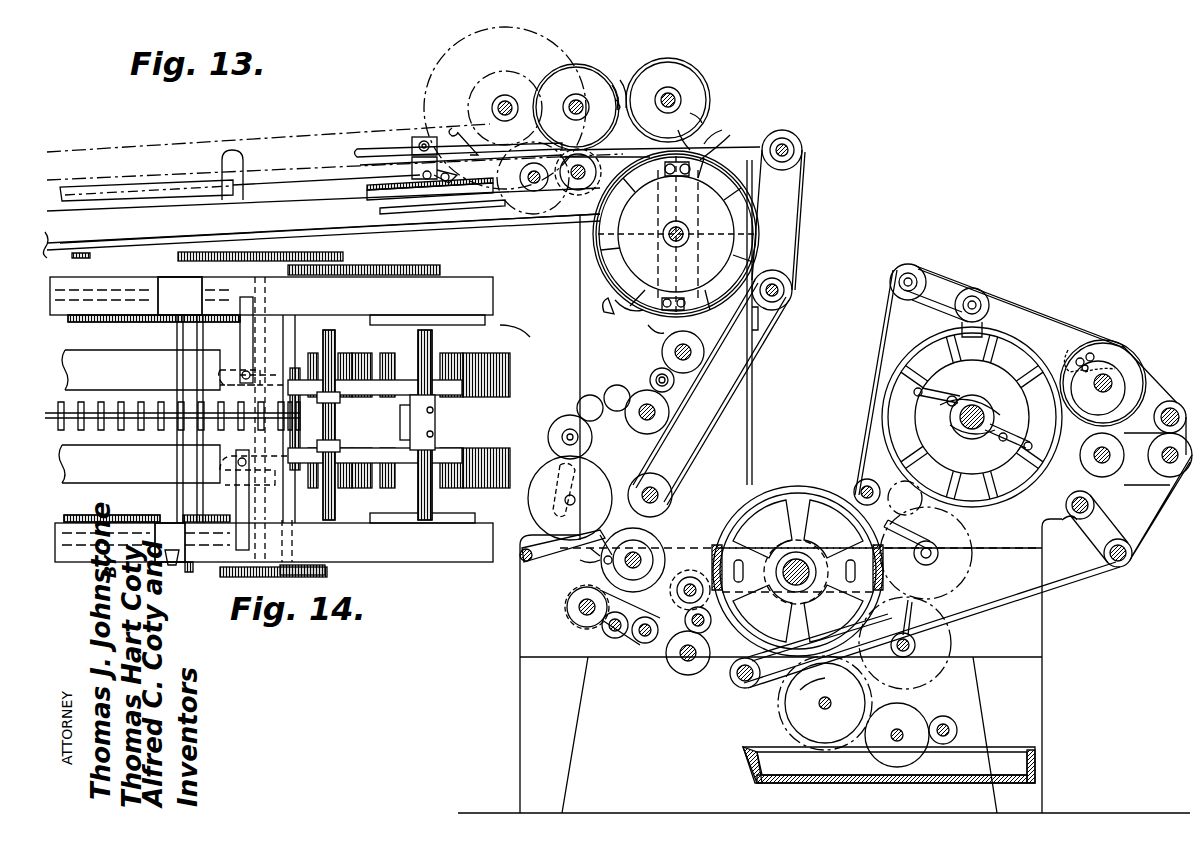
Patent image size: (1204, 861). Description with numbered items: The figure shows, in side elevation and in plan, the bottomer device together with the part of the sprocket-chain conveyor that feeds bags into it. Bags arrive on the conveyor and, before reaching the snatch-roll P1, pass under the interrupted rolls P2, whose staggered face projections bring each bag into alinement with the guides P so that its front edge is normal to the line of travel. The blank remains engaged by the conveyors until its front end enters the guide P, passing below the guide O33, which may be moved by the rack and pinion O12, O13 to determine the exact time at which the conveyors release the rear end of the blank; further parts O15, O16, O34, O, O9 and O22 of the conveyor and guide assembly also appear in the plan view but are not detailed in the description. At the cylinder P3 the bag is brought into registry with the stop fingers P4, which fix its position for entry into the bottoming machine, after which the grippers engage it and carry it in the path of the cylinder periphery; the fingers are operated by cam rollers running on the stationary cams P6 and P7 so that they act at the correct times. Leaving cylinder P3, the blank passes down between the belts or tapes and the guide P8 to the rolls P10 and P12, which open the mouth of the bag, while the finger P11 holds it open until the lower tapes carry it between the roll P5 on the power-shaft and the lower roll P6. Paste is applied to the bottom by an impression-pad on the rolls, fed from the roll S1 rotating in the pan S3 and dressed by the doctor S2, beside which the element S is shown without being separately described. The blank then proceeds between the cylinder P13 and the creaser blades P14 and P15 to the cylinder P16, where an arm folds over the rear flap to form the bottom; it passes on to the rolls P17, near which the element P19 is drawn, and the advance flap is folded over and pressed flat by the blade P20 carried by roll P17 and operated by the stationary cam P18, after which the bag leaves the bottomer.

In FIG. 13, the feed table rail O15 is at (278, 163).
In FIG. 13, the guide O33 is at (372, 150).
In FIG. 13, the lower rail O16 is at (328, 168).
In FIG. 13, the rack O12 is at (380, 189).
In FIG. 14, the rack O12 is at (125, 325).
In FIG. 13, the pinion O13 is at (444, 193).
In FIG. 14, the pinion O13 is at (195, 318).
In FIG. 13, the bar O34 is at (413, 196).
In FIG. 13, the pawl O is at (462, 135).
In FIG. 14, the comb bar O9 is at (135, 400).
In FIG. 14, the stop O22 is at (188, 564).
In FIG. 13, the guide P is at (508, 332).
In FIG. 14, the guide P is at (273, 370).
In FIG. 13, the snatch-roll P1 is at (680, 80).
In FIG. 14, the snatch-roll P1 is at (454, 444).
In FIG. 13, the interrupted roll P2 is at (582, 95).
In FIG. 14, the interrupted roll P2 is at (370, 382).
In FIG. 13, the cylinder P3 is at (713, 144).
In FIG. 14, the cylinder P3 is at (508, 444).
In FIG. 13, the stop finger P4 is at (700, 140).
In FIG. 13, the roll on the power-shaft P5 is at (681, 670).
In FIG. 13, the stationary cam P6 is at (738, 231).
In FIG. 13, the stationary cam P7 is at (730, 252).
In FIG. 13, the guide P8 is at (675, 397).
In FIG. 13, the roll P10 is at (591, 480).
In FIG. 13, the finger P11 is at (557, 573).
In FIG. 13, the roll P12 is at (660, 545).
In FIG. 13, the cylinder P13 is at (795, 494).
In FIG. 13, the creaser blade P14 is at (918, 620).
In FIG. 13, the creaser blade P15 is at (940, 537).
In FIG. 13, the cylinder P16 is at (930, 352).
In FIG. 13, the roll P17 is at (1106, 356).
In FIG. 13, the stationary cam P18 is at (1126, 364).
In FIG. 13, the arm P19 is at (1110, 532).
In FIG. 13, the blade P20 is at (1070, 348).
In FIG. 13, the stacking roller S is at (825, 703).
In FIG. 13, the paste roll S1 is at (897, 735).
In FIG. 13, the doctor S2 is at (943, 720).
In FIG. 13, the pan S3 is at (865, 775).